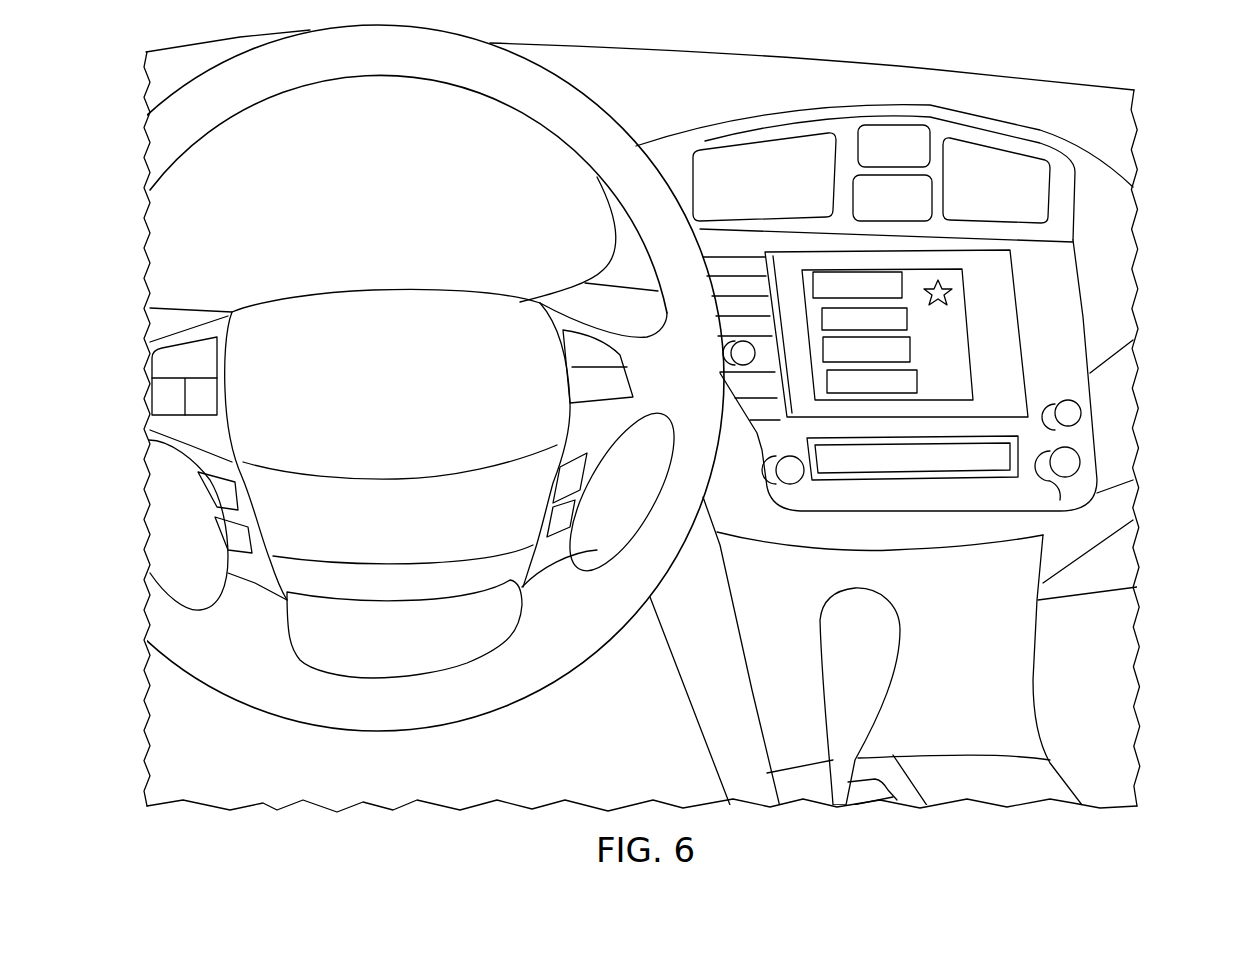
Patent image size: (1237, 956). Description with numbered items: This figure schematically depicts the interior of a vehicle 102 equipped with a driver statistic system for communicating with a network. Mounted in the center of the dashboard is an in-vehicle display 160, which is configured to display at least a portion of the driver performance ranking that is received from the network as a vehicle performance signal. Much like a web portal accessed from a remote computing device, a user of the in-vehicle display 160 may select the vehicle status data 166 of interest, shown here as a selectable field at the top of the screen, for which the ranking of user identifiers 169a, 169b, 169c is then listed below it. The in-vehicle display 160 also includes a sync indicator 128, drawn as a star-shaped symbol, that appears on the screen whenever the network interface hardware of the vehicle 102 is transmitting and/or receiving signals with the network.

The vehicle 102 is at (1153, 112).
The in-vehicle display 160 is at (952, 262).
The vehicle status data 166 is at (862, 272).
The sync indicator 128 is at (952, 292).
The user identifier 169a is at (907, 318).
The user identifier 169b is at (910, 350).
The user identifier 169c is at (917, 380).